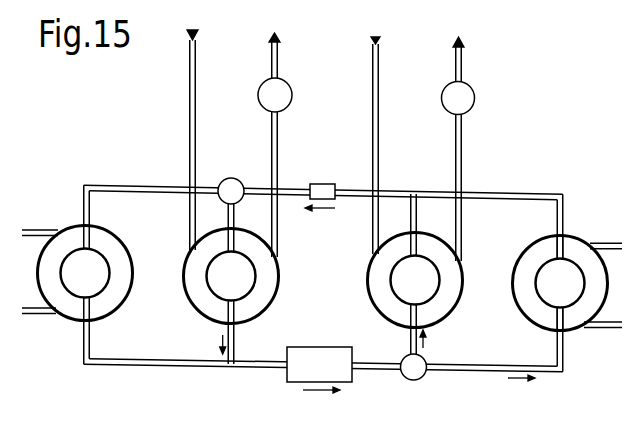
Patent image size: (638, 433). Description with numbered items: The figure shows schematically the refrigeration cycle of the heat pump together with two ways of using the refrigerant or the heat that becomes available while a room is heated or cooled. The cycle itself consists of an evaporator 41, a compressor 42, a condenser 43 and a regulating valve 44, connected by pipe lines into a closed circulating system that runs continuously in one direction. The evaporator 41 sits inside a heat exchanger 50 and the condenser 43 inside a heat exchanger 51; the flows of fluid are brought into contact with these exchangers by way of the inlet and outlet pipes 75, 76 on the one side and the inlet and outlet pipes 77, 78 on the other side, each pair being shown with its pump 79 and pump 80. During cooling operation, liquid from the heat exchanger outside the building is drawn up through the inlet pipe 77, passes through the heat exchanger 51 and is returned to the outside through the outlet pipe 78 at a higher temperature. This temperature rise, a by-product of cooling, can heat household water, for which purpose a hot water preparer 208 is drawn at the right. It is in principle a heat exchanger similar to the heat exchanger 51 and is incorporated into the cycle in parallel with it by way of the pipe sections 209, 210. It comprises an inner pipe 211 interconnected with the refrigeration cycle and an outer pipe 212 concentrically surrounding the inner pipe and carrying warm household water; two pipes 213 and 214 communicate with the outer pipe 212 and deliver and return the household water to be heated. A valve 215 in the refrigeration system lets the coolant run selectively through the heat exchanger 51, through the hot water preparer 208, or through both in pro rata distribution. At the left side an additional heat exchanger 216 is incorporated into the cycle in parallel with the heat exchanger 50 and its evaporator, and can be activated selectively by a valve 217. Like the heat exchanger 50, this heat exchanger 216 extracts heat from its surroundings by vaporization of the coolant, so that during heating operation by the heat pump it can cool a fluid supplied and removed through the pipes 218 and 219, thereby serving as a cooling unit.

The evaporator 41 is at (207, 287).
The compressor 42 is at (330, 376).
The condenser 43 is at (392, 300).
The regulating valve 44 is at (323, 184).
The heat exchanger 50 is at (179, 260).
The heat exchanger 51 is at (455, 310).
The inlet pipe 75 is at (189, 114).
The outlet pipe 76 is at (278, 138).
The inlet pipe 77 is at (378, 106).
The outlet pipe 78 is at (461, 146).
The pump 79 is at (292, 95).
The pump 80 is at (474, 97).
The hot water preparer 208 is at (570, 331).
The pipe section 209 is at (513, 194).
The pipe section 210 is at (552, 376).
The inner pipe 211 is at (545, 312).
The outer pipe 212 is at (524, 248).
The pipe 213 is at (598, 242).
The pipe 214 is at (605, 330).
The valve 215 is at (425, 376).
The additional heat exchanger 216 is at (106, 316).
The valve 217 is at (227, 178).
The pipe 218 is at (39, 229).
The pipe 219 is at (38, 317).